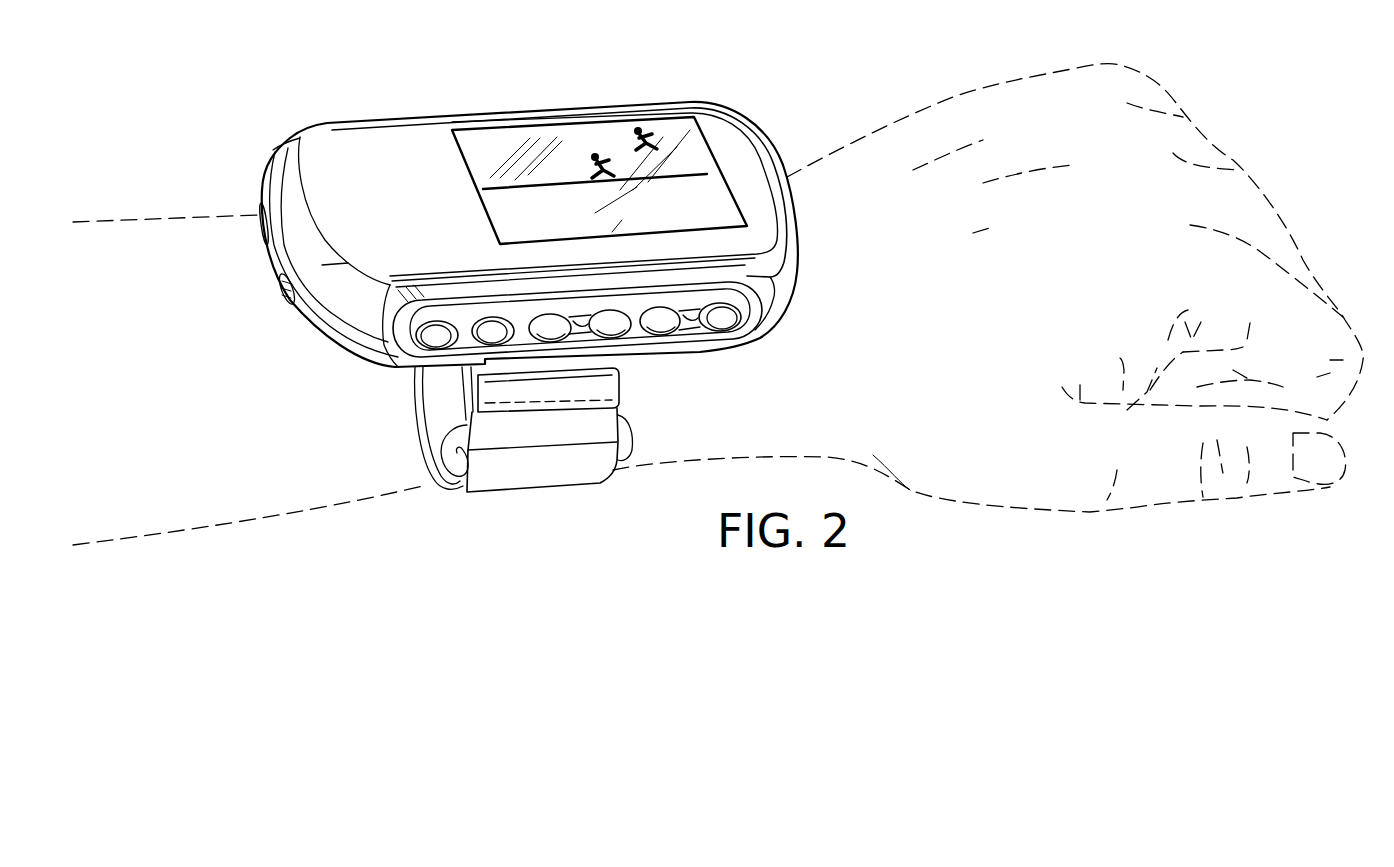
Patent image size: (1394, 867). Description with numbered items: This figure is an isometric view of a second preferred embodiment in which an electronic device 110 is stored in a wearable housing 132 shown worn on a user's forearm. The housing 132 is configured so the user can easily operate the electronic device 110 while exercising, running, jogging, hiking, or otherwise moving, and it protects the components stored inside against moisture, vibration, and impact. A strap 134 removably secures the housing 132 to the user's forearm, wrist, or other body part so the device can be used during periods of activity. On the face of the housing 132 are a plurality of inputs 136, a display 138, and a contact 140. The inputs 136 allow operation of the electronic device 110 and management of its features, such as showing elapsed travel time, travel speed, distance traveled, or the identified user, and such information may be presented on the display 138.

The electronic device 110 is at (583, 73).
The housing 132 is at (377, 117).
The strap 134 is at (550, 472).
The plurality of inputs 136 is at (667, 327).
The display 138 is at (694, 148).
The contact 140 is at (279, 293).